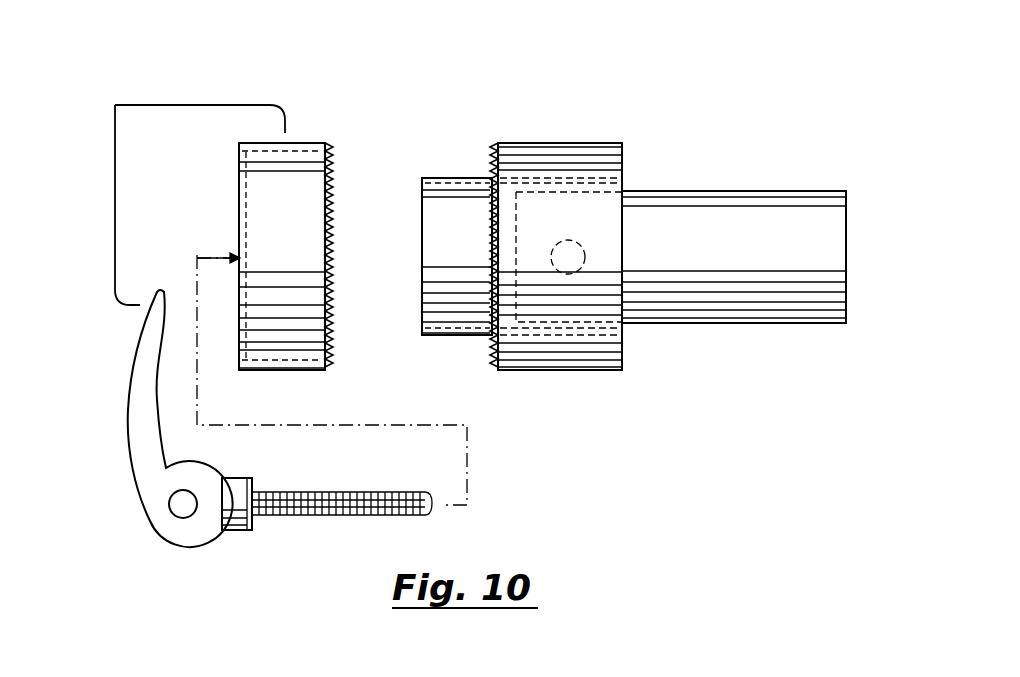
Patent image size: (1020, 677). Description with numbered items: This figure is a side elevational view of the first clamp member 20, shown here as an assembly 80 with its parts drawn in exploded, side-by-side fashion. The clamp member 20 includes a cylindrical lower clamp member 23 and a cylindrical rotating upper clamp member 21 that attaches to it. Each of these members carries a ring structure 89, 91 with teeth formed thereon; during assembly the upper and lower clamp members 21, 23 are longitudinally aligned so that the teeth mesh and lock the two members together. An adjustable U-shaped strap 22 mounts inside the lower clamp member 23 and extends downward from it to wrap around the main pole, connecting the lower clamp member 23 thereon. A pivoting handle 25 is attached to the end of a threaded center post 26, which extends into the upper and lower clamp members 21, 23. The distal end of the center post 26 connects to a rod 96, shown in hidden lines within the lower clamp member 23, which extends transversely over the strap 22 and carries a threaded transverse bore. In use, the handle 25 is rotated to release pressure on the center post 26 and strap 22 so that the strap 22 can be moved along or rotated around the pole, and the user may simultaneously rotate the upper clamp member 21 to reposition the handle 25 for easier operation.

The clamp assembly 80 is at (115, 105).
The upper clamp member 21 is at (322, 224).
The ring structure 89 is at (333, 215).
The ring structure 91 is at (492, 150).
The lower clamp member 23 is at (588, 229).
The rod 96 is at (570, 251).
The first clamp member 20 is at (740, 223).
The strap 22 is at (745, 257).
The handle 25 is at (168, 533).
The center post 26 is at (418, 514).